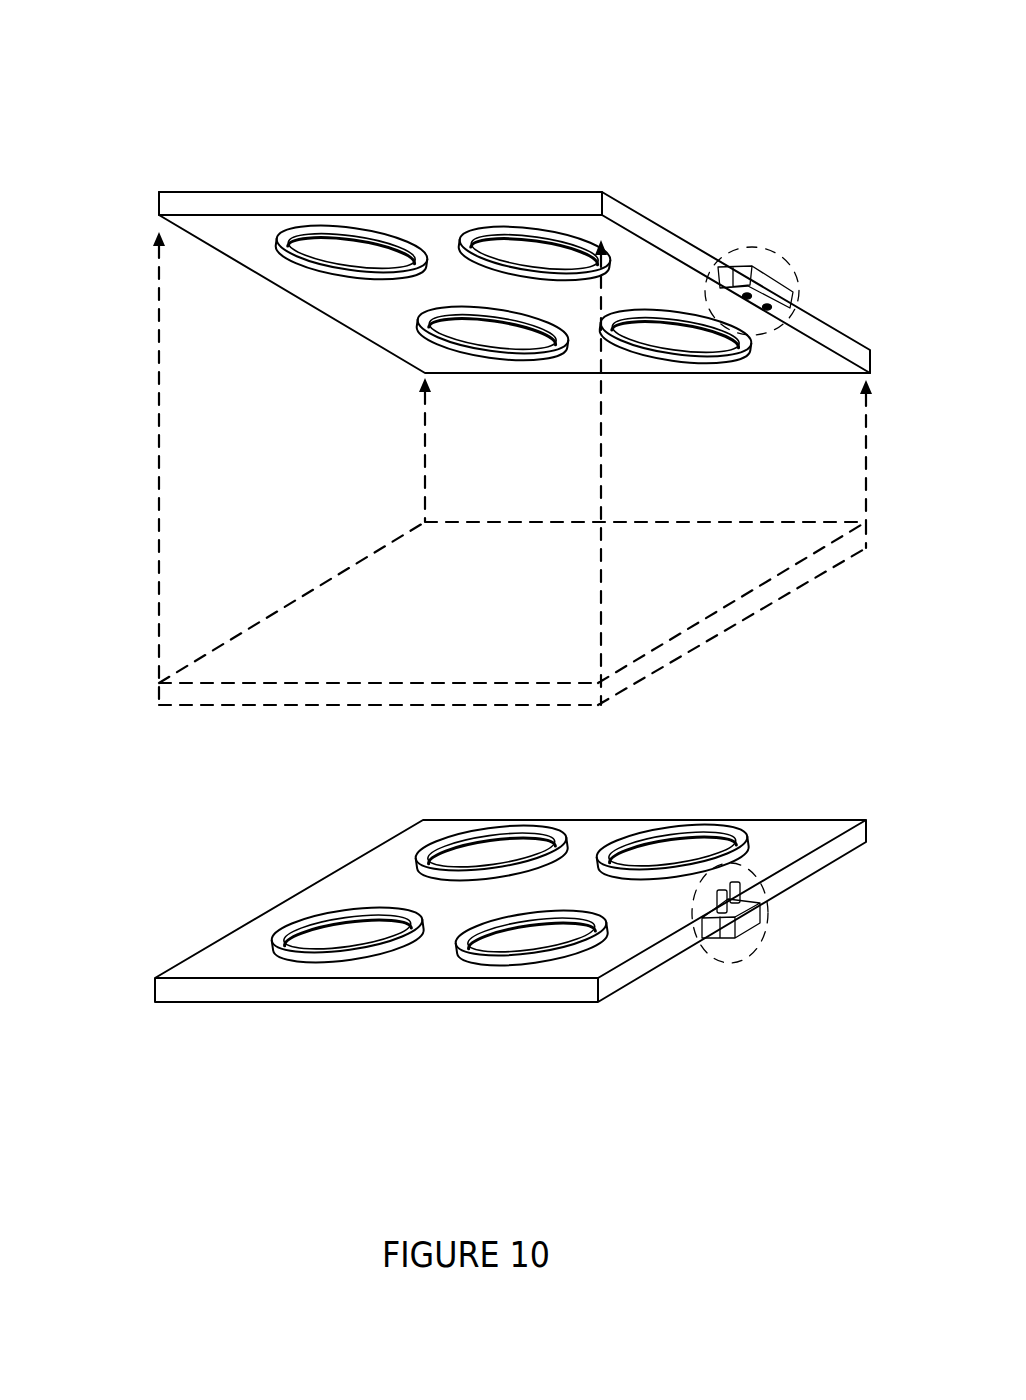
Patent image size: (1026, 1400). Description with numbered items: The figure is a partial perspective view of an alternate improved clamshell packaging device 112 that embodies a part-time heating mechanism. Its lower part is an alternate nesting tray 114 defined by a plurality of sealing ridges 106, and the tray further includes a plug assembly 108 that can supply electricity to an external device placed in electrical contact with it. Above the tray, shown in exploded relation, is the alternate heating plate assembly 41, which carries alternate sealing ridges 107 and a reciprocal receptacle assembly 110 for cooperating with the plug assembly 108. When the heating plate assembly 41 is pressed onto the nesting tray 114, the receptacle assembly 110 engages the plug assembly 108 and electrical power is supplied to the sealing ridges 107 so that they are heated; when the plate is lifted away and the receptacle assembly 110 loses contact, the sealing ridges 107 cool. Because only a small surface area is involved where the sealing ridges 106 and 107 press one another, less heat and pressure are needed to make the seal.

The heating plate assembly 41 is at (574, 200).
The sealing ridges 106 is at (417, 878).
The alternate sealing ridges 107 is at (280, 236).
The plug assembly 108 is at (753, 866).
The receptacle assembly 110 is at (790, 315).
The clamshell packaging device 112 is at (77, 776).
The nesting tray 114 is at (907, 1062).